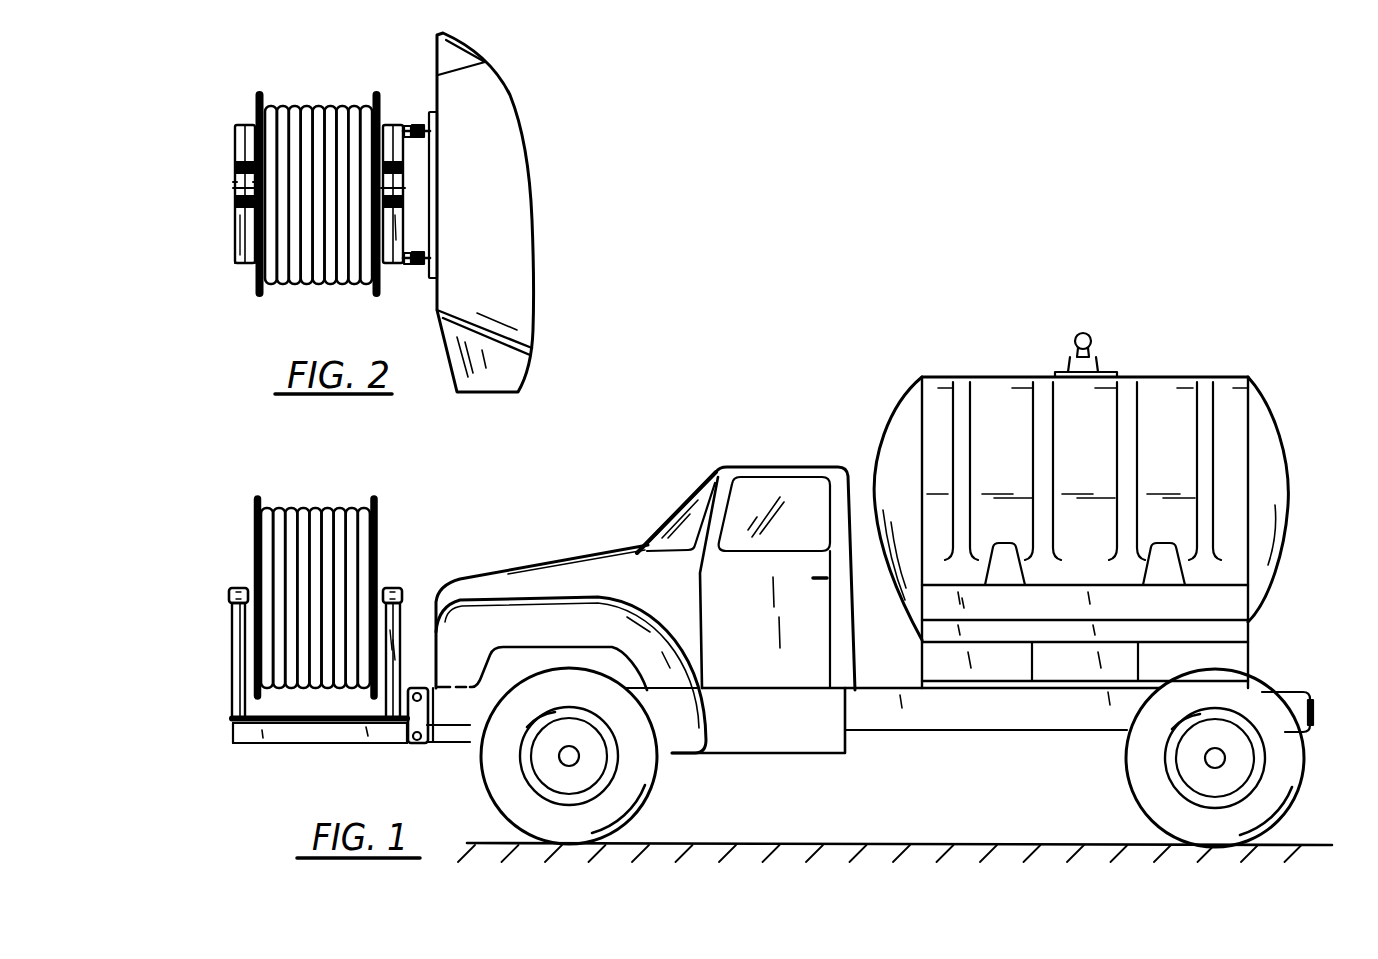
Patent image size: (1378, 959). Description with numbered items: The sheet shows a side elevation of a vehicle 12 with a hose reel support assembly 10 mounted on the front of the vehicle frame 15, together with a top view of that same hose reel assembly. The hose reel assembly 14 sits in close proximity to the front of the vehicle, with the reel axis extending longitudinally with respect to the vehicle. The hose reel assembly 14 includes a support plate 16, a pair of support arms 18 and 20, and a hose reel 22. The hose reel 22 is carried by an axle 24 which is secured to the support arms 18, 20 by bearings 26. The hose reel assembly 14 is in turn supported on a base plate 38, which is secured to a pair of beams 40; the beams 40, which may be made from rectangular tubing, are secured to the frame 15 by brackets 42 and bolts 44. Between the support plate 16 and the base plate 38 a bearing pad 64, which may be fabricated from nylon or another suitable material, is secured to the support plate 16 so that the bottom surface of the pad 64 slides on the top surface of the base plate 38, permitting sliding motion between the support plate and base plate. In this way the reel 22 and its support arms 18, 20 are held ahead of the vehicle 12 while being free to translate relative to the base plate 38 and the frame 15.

In FIG. 2, the hose reel support assembly 10 is at (233, 266).
In FIG. 1, the hose reel support assembly 10 is at (289, 760).
In FIG. 2, the vehicle 12 is at (493, 402).
In FIG. 1, the vehicle 12 is at (764, 453).
In FIG. 2, the hose reel assembly 14 is at (312, 288).
In FIG. 1, the hose reel assembly 14 is at (250, 512).
In FIG. 2, the frame 15 is at (436, 228).
In FIG. 1, the frame 15 is at (470, 728).
In FIG. 2, the support plate 16 is at (243, 124).
In FIG. 1, the support plate 16 is at (254, 715).
In FIG. 2, the support arm 18 is at (240, 228).
In FIG. 1, the support arm 18 is at (237, 636).
In FIG. 2, the support arm 20 is at (403, 215).
In FIG. 1, the support arm 20 is at (395, 645).
In FIG. 1, the hose reel 22 is at (379, 503).
In FIG. 2, the axle 24 is at (234, 193).
In FIG. 1, the axle 24 is at (404, 598).
In FIG. 2, the bearings 26 is at (236, 198).
In FIG. 1, the bearings 26 is at (240, 588).
In FIG. 2, the base plate 38 is at (394, 126).
In FIG. 1, the base plate 38 is at (235, 729).
In FIG. 2, the beams 40 is at (410, 126).
In FIG. 1, the beams 40 is at (258, 736).
In FIG. 2, the brackets 42 is at (433, 131).
In FIG. 1, the brackets 42 is at (406, 723).
In FIG. 2, the bolts 44 is at (426, 137).
In FIG. 1, the bolts 44 is at (428, 690).
In FIG. 1, the bearing pad 64 is at (333, 722).